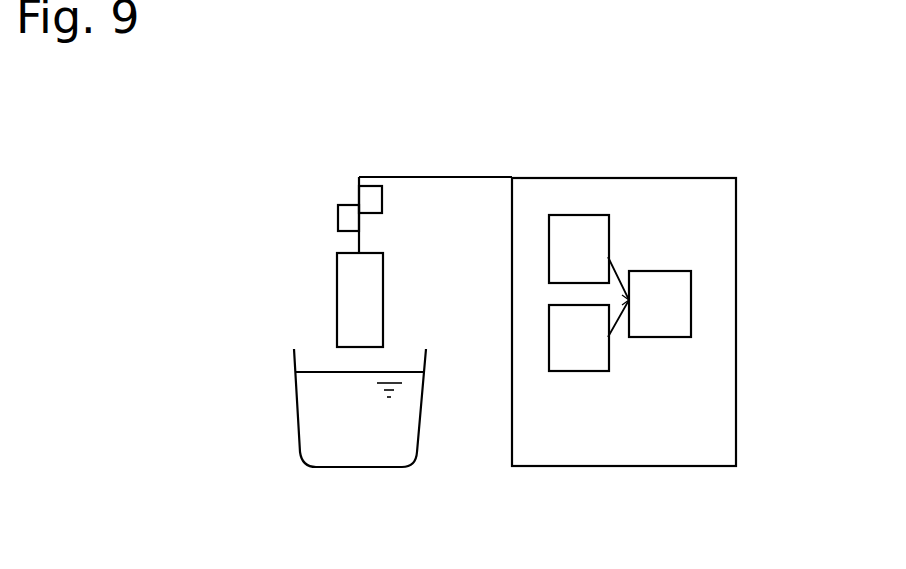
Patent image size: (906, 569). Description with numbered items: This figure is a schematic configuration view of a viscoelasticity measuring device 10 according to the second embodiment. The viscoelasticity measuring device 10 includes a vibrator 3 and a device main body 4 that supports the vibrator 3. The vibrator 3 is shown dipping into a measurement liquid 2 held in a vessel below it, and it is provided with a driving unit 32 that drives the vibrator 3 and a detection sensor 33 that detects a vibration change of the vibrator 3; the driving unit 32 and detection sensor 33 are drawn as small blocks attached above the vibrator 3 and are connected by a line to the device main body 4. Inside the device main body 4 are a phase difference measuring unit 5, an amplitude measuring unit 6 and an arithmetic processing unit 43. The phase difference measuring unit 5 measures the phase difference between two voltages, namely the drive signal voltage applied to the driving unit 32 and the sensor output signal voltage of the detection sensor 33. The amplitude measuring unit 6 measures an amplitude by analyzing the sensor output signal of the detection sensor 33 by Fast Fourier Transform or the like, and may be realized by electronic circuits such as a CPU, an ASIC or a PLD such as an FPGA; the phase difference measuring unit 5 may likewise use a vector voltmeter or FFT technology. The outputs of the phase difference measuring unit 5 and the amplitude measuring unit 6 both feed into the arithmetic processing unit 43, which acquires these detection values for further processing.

The viscoelasticity measuring device 10 is at (651, 101).
The measurement liquid 2 is at (314, 422).
The vibrator 3 is at (343, 301).
The driving unit 32 is at (382, 199).
The detection sensor 33 is at (338, 217).
The device main body 4 is at (717, 316).
The phase difference measuring unit 5 is at (570, 215).
The amplitude measuring unit 6 is at (580, 372).
The arithmetic processing unit 43 is at (662, 271).